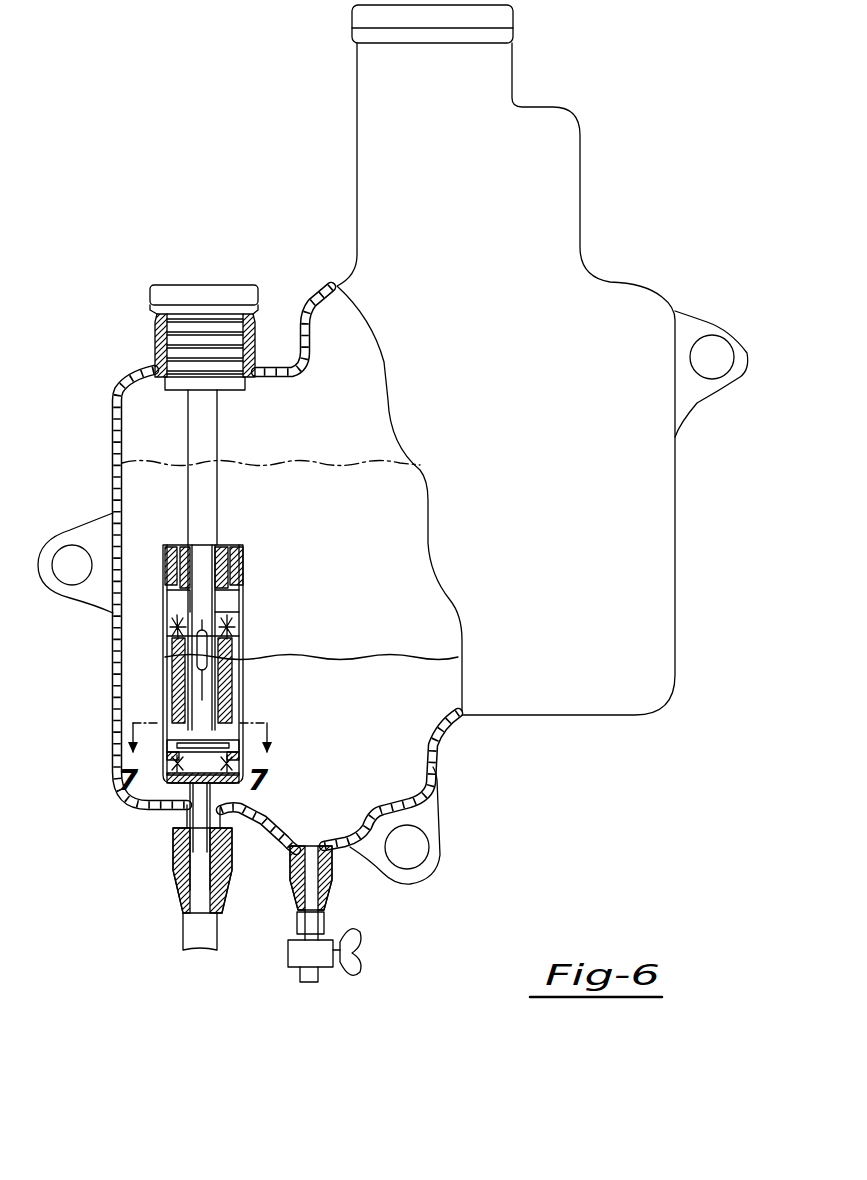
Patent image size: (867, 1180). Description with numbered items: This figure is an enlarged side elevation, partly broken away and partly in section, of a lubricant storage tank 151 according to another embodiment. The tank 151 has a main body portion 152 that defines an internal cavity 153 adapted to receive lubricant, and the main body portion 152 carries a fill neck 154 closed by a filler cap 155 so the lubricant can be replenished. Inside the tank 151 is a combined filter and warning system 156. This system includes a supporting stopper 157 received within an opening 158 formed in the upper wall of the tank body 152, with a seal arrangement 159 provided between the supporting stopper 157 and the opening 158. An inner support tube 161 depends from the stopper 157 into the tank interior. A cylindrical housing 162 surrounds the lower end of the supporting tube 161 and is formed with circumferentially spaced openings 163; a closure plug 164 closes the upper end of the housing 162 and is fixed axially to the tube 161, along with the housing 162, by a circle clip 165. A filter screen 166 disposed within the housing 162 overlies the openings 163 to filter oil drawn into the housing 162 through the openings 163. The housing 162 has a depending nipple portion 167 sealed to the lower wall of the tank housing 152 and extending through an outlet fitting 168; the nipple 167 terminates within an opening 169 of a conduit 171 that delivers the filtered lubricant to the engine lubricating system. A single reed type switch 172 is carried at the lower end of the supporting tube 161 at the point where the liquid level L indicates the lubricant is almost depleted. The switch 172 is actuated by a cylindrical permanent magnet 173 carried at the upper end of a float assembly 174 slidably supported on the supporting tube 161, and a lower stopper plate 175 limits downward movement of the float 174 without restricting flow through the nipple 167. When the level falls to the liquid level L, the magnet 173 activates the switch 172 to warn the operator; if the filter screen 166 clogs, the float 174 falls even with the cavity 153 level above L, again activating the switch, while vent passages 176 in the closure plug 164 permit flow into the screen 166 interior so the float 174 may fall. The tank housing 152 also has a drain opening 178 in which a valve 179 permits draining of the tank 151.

The lubricant storage tank 151 is at (566, 186).
The main body portion 152 is at (560, 262).
The internal cavity 153 is at (430, 543).
The fill neck 154 is at (490, 78).
The filler cap 155 is at (498, 17).
The combined filter and warning system 156 is at (252, 612).
The supporting stopper 157 is at (210, 300).
The opening 158 is at (178, 335).
The seal arrangement 159 is at (163, 357).
The inner support tube 161 is at (230, 612).
The cylindrical housing 162 is at (235, 648).
The circumferentially spaced openings 163 is at (168, 612).
The closure plug 164 is at (236, 560).
The circle clip 165 is at (212, 540).
The filter screen 166 is at (170, 622).
The depending nipple portion 167 is at (176, 873).
The outlet fitting 168 is at (182, 822).
The opening 169 is at (200, 898).
The conduit 171 is at (195, 934).
The reed type switch 172 is at (212, 675).
The permanent magnet 173 is at (243, 660).
The float assembly 174 is at (232, 690).
The lower stopper plate 175 is at (241, 762).
The vent passages 176 is at (176, 545).
The drain opening 178 is at (334, 876).
The valve 179 is at (356, 944).
The liquid level L is at (433, 657).